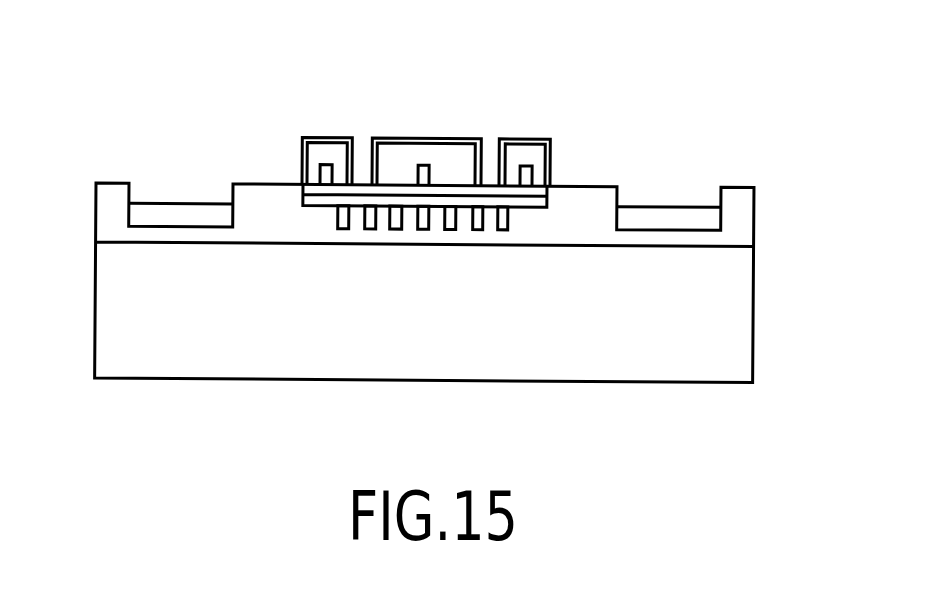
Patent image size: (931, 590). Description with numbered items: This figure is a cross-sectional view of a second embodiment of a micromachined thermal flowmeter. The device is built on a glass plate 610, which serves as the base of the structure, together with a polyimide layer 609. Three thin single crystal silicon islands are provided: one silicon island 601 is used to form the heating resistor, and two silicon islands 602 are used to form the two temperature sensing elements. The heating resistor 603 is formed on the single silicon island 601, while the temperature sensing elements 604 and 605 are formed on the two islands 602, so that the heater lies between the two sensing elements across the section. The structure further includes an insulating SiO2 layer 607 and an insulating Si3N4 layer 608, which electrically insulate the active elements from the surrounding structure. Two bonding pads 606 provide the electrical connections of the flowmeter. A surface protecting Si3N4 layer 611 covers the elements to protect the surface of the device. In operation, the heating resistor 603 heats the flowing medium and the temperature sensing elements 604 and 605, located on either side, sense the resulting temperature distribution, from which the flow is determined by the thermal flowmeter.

The single crystal silicon island 601 is at (453, 158).
The single crystal silicon islands 602 is at (319, 156).
The heating resistor 603 is at (424, 172).
The temperature sensing element 604 is at (328, 173).
The temperature sensing element 605 is at (525, 172).
The bonding pads 606 is at (147, 212).
The insulating SiO2 layer 607 is at (543, 195).
The insulating Si3N4 layer 608 is at (310, 198).
The polyimide layer 609 is at (737, 197).
The glass plate 610 is at (193, 258).
The surface protecting Si3N4 layer 611 is at (548, 143).